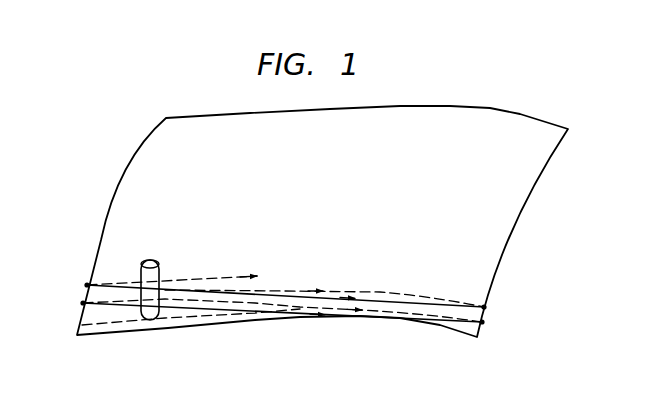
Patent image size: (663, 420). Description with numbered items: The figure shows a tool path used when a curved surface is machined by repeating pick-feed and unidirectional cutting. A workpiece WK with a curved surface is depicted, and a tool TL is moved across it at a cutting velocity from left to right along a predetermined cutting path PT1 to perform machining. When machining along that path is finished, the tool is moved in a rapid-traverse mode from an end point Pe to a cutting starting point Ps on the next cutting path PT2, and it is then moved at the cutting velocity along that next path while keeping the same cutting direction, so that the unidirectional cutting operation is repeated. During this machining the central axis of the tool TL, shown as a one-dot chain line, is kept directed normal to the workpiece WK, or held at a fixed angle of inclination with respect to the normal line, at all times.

The workpiece WK is at (480, 105).
The tool TL is at (140, 270).
The cutting path PT1 is at (228, 313).
The next cutting path PT2 is at (450, 298).
The cutting starting point Ps is at (73, 295).
The end point Pe is at (492, 323).